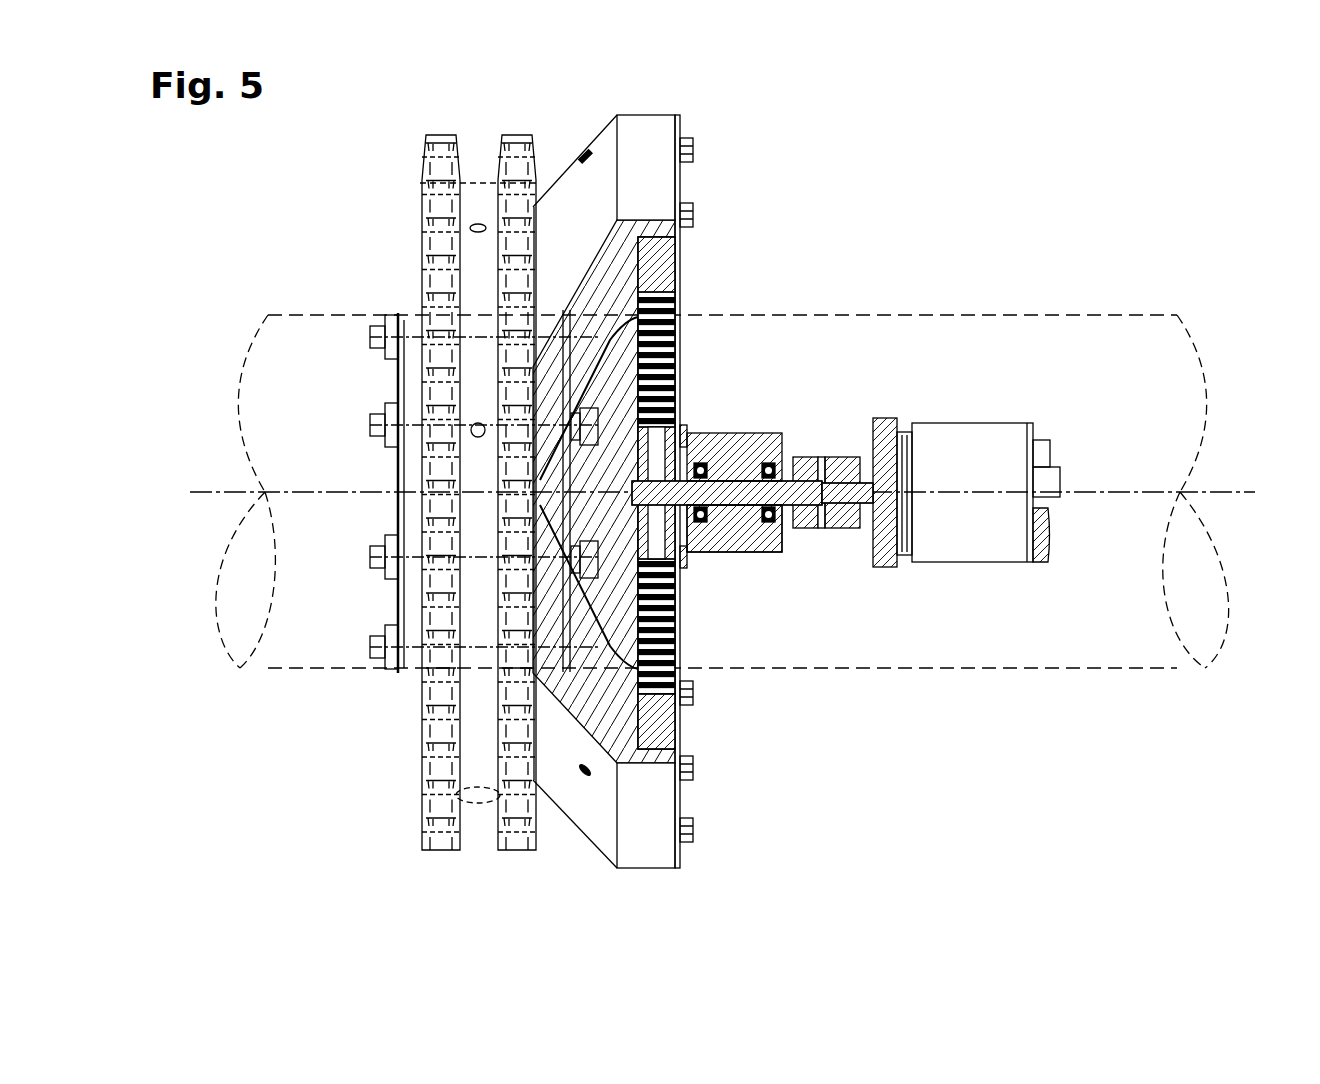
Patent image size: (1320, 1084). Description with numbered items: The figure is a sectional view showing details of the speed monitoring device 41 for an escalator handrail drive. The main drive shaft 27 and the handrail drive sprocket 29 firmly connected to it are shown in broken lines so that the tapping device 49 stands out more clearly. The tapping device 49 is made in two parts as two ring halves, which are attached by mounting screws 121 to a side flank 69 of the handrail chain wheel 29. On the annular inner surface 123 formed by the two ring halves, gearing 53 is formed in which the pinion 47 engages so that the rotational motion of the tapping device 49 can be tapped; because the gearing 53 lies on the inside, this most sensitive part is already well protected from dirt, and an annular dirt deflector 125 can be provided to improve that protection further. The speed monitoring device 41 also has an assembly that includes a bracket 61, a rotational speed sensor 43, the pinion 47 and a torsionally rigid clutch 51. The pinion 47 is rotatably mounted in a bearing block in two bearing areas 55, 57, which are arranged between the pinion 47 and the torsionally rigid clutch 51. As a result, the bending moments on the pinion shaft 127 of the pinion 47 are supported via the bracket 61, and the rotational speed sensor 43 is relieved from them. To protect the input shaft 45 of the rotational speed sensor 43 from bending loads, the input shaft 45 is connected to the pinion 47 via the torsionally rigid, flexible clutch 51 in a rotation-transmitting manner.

The main drive shaft 27 is at (1040, 350).
The handrail drive sprocket 29 is at (473, 197).
The speed monitoring device 41 is at (846, 430).
The rotational speed sensor 43 is at (964, 545).
The input shaft 45 is at (842, 522).
The pinion 47 is at (673, 400).
The tapping device 49 is at (570, 190).
The torsionally rigid clutch 51 is at (808, 458).
The gearing 53 is at (673, 345).
The bearing area 55 is at (700, 553).
The bearing area 57 is at (784, 520).
The bracket 61 is at (734, 530).
The side flank 69 is at (516, 858).
The mounting screws 121 is at (372, 332).
The annular inner surface 123 is at (646, 690).
The annular dirt deflector 125 is at (682, 119).
The pinion shaft 127 is at (748, 475).